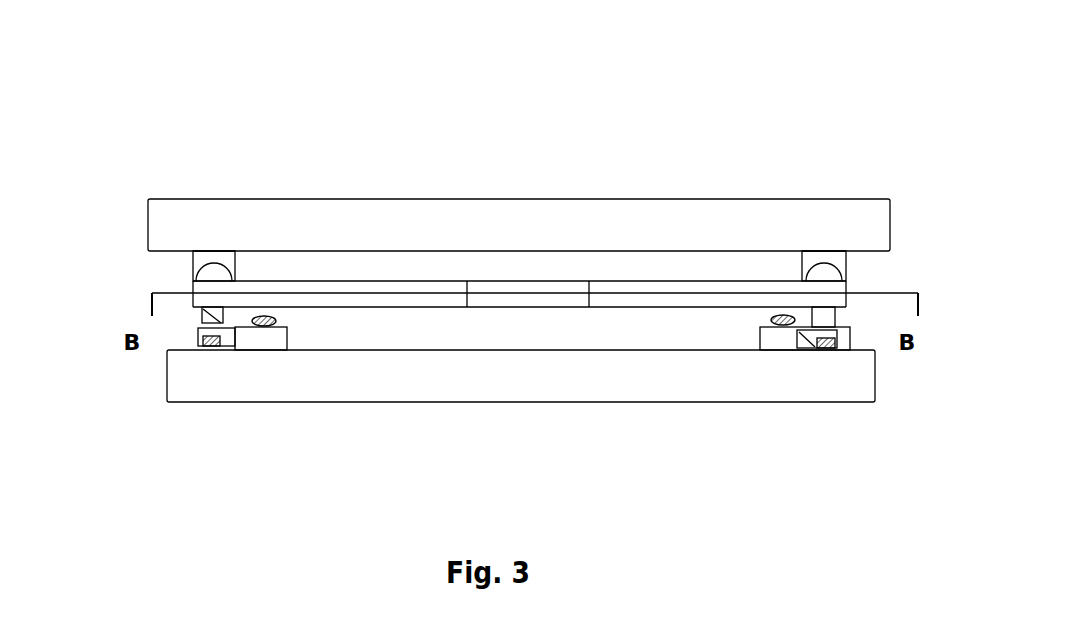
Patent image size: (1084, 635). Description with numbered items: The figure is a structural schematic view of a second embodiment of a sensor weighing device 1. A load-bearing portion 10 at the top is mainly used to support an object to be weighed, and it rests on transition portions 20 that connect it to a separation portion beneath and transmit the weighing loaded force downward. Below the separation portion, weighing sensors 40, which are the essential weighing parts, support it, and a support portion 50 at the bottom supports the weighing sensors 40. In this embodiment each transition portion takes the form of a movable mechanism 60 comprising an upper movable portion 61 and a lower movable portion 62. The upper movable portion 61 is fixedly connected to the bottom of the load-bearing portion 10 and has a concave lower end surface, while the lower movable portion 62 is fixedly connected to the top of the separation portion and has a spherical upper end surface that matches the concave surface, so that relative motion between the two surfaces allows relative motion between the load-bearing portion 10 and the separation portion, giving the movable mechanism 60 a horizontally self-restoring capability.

The sensor weighing device 1 is at (800, 128).
The load-bearing portion 10 is at (532, 215).
The transition portions 20 is at (625, 300).
The weighing sensors 40 is at (257, 335).
The support portion 50 is at (528, 378).
The movable mechanism 60 is at (168, 274).
The upper movable portion 61 is at (202, 255).
The lower movable portion 62 is at (217, 268).